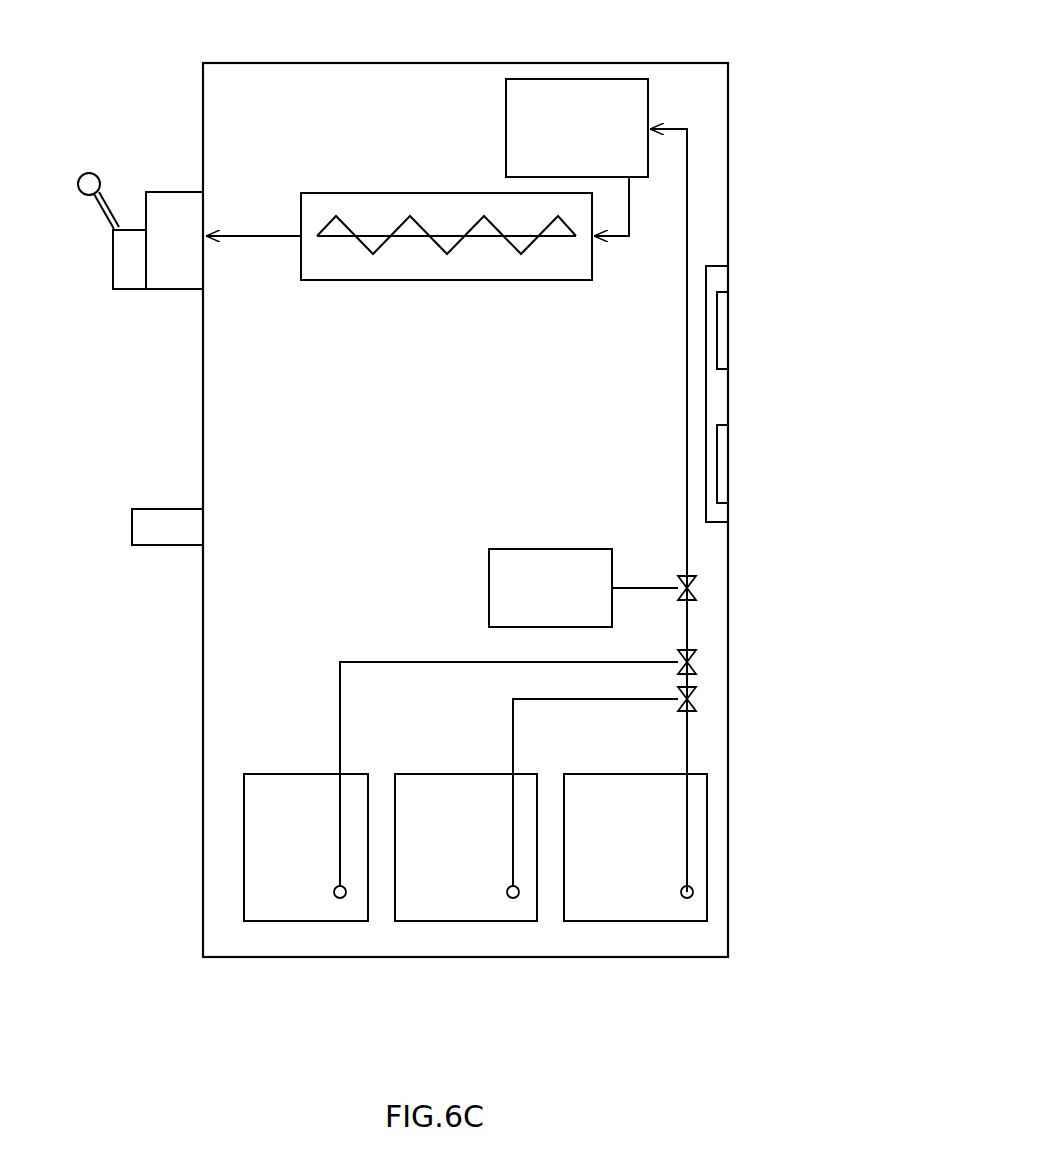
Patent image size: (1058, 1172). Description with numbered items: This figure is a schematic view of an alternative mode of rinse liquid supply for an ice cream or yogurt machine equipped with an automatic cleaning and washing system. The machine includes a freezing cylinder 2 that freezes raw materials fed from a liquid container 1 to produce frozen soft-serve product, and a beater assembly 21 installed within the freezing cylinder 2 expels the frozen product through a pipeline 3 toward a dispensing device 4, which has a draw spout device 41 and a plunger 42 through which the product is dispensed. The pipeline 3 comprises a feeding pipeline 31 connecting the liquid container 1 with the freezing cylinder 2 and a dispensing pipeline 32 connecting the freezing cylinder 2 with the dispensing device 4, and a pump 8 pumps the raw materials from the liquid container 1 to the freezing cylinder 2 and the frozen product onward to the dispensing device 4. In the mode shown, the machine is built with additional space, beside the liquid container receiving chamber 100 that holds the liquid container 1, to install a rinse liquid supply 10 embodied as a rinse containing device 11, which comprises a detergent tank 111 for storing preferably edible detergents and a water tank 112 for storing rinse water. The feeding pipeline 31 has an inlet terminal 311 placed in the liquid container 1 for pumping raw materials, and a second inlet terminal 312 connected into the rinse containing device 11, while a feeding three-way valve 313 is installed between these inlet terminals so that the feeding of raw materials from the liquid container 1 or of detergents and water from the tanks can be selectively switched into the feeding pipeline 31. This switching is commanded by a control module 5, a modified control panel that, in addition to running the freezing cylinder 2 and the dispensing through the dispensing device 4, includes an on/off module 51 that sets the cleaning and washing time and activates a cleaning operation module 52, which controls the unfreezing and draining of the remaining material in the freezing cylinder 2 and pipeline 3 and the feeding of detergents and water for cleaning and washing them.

The liquid container receiving chamber 100 is at (705, 748).
The liquid container 1 is at (695, 838).
The rinse liquid supply 10 is at (546, 859).
The rinse containing device 11 is at (585, 103).
The detergent tank 111 is at (470, 900).
The water tank 112 is at (300, 900).
The freezing cylinder 2 is at (500, 285).
The beater assembly 21 is at (425, 253).
The pipeline 3 is at (716, 124).
The feeding pipeline 31 is at (696, 228).
The dispensing pipeline 32 is at (253, 252).
The inlet terminal 311 is at (697, 888).
The second inlet terminal 312 is at (510, 890).
The feeding three-way valve 313 is at (700, 699).
The dispensing device 4 is at (121, 170).
The draw spout device 41 is at (171, 220).
The plunger 42 is at (102, 213).
The control module 5 is at (792, 394).
The on/off module 51 is at (723, 465).
The cleaning operation module 52 is at (722, 327).
The pump 8 is at (560, 576).